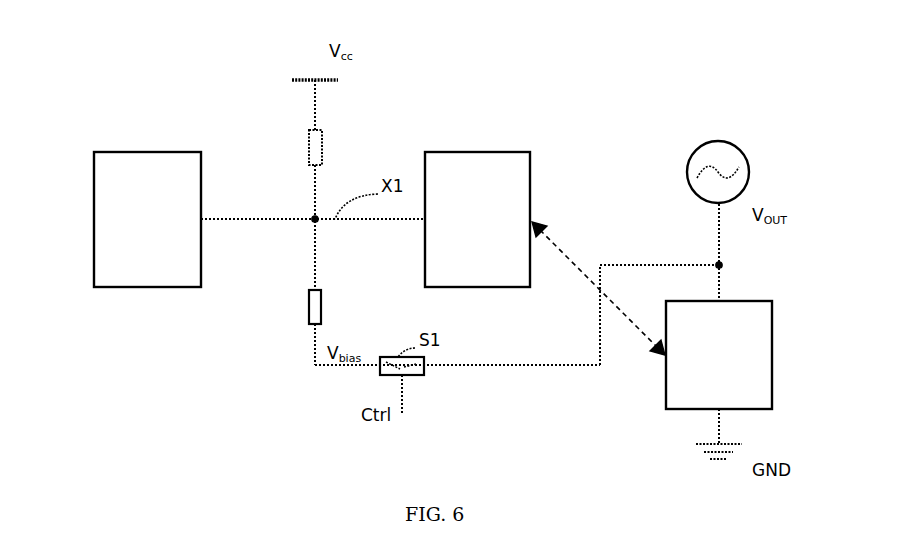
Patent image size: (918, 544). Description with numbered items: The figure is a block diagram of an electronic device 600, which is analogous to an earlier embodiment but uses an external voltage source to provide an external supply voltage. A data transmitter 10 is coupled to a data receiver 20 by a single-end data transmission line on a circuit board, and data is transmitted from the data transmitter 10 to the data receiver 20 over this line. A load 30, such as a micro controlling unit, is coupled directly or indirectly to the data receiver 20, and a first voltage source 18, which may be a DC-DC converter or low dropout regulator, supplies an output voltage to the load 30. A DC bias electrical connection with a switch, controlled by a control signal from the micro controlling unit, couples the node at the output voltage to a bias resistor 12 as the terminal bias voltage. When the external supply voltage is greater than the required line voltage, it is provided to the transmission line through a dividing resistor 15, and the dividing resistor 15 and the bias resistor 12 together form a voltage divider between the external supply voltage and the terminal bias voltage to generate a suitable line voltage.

The electronic device 600 is at (160, 88).
The data transmitter 10 is at (96, 152).
The dividing resistor 15 is at (309, 158).
The data receiver 20 is at (530, 152).
The bias resistor 12 is at (308, 324).
The first voltage source 18 is at (750, 162).
The load 30 is at (772, 301).